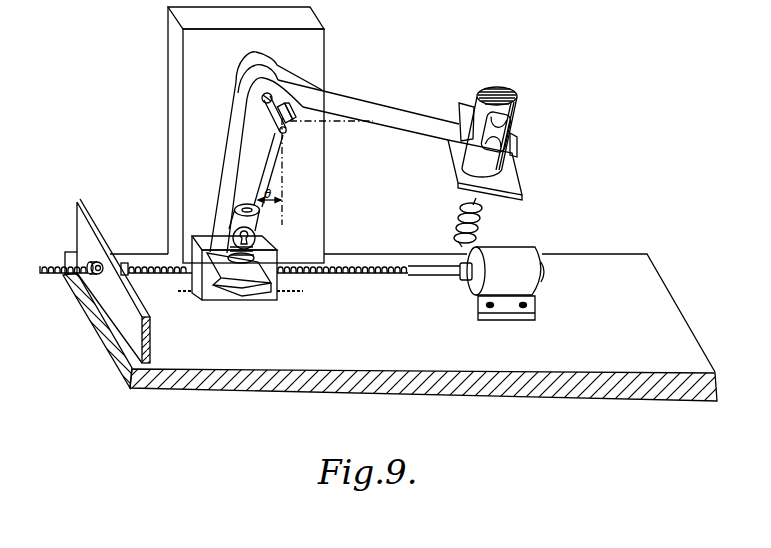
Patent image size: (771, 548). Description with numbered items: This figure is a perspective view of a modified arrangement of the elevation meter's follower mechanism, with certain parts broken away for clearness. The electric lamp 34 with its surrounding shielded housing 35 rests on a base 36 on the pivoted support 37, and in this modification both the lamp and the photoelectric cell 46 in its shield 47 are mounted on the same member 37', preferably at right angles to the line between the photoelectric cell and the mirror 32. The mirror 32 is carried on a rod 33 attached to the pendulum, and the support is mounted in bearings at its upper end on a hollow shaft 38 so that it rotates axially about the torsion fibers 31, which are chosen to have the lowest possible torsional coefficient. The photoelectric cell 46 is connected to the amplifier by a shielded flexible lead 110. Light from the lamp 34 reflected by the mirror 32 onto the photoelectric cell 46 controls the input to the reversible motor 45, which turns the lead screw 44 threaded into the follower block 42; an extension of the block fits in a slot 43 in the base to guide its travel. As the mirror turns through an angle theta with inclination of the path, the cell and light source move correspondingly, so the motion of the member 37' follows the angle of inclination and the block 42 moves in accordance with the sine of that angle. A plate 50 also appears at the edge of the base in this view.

The torsion fibers 31 is at (262, 99).
The mirror 32 is at (292, 123).
The rod 33 is at (287, 133).
The electric lamp 34 is at (258, 241).
The shielded housing 35 is at (262, 218).
The base 36 is at (270, 296).
The pivoted support 37 is at (218, 167).
The member 37' is at (368, 102).
The hollow shaft 38 is at (270, 63).
The block 42 is at (202, 236).
The slot 43 is at (300, 293).
The lead screw 44 is at (398, 267).
The reversible motor 45 is at (526, 259).
The photoelectric cell 46 is at (498, 133).
The shield 47 is at (512, 99).
The support plate 50 is at (77, 202).
The shielded flexible lead 110 is at (481, 226).